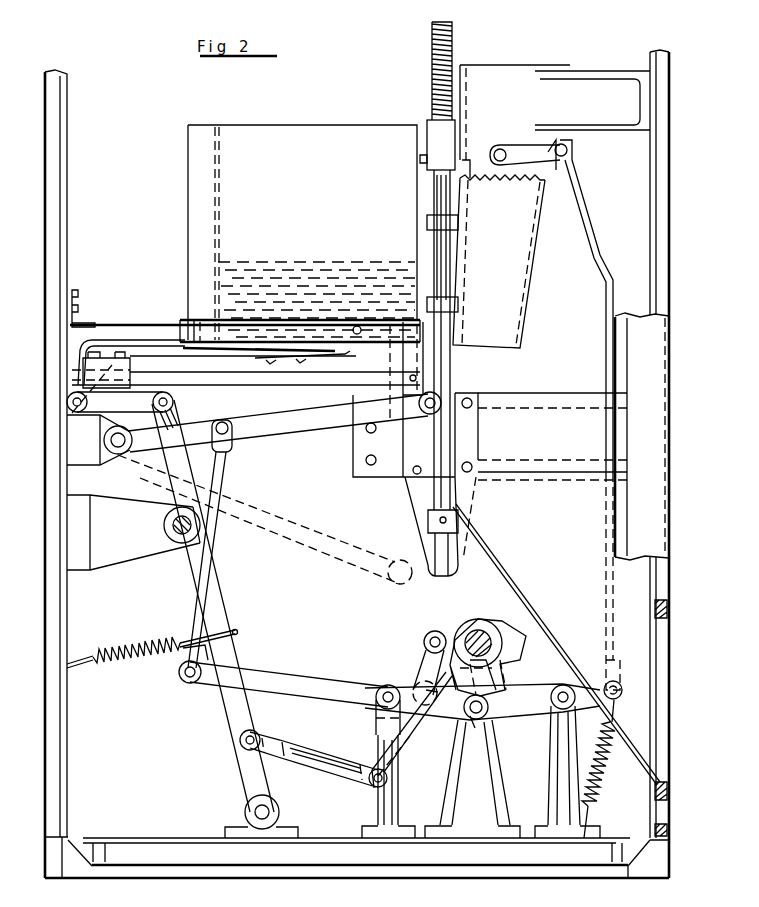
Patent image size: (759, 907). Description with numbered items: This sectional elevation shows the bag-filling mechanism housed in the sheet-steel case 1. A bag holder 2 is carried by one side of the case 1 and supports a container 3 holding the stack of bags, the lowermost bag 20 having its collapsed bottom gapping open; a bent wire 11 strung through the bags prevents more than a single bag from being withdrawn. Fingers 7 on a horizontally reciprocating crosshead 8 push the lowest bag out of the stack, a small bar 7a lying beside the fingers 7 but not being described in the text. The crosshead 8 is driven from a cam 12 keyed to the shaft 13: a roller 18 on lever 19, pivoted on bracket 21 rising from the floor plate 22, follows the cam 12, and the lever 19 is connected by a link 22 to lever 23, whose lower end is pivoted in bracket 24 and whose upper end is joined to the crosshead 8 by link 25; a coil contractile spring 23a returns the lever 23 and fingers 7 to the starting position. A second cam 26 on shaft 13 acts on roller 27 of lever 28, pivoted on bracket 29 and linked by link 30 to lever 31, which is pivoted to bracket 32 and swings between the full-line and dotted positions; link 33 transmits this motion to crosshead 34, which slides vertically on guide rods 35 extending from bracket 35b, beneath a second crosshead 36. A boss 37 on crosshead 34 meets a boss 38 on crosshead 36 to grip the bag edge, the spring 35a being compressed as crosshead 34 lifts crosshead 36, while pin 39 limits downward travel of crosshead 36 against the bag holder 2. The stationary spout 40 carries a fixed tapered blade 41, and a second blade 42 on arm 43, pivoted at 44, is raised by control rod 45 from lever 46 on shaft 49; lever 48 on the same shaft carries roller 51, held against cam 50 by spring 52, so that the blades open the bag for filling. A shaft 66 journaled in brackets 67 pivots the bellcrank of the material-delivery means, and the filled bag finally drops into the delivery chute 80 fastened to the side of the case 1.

The case 1 is at (48, 598).
The bag holder 2 is at (185, 320).
The container 3 is at (302, 232).
The fingers 7 is at (208, 360).
The bar 7a is at (340, 366).
The crosshead 8 is at (132, 368).
The bent wire 11 is at (220, 224).
The cam 12 is at (448, 624).
The shaft 13 is at (478, 630).
The roller 18 is at (424, 644).
The lever 19 is at (412, 724).
The lowermost bag 20 is at (300, 250).
The bracket 21 is at (472, 779).
The floor plate 22 is at (306, 754).
The lever 23 is at (230, 592).
The coil contractile spring 23a is at (116, 645).
The bracket 24 is at (283, 826).
The link 25 is at (120, 402).
The second cam 26 is at (456, 676).
The roller 27 is at (484, 698).
The lever 28 is at (308, 686).
The bracket 29 is at (374, 720).
The link 30 is at (210, 545).
The lever 31 is at (320, 424).
The bracket 32 is at (99, 440).
The link 33 is at (440, 382).
The crosshead 34 is at (459, 223).
The guide rods 35 is at (440, 441).
The coil contractile spring 35a is at (456, 54).
The bracket 35b is at (482, 445).
The second crosshead 36 is at (441, 145).
The boss 37 is at (452, 206).
The boss 38 is at (471, 170).
The pin 39 is at (420, 159).
The stationary spout 40 is at (515, 112).
The tapered steel blade 41 is at (468, 152).
The second tapered steel blade 42 is at (528, 237).
The arm 43 is at (546, 142).
The pivot 44 is at (540, 128).
The control rod 45 is at (594, 262).
The lever 46 is at (604, 672).
The second lever 48 is at (528, 720).
The shaft 49 is at (558, 686).
The cam 50 is at (504, 664).
The roller 51 is at (474, 724).
The coil contractile spring 52 is at (606, 790).
The shaft 66 is at (170, 536).
The brackets 67 is at (110, 503).
The delivery chute 80 is at (556, 631).